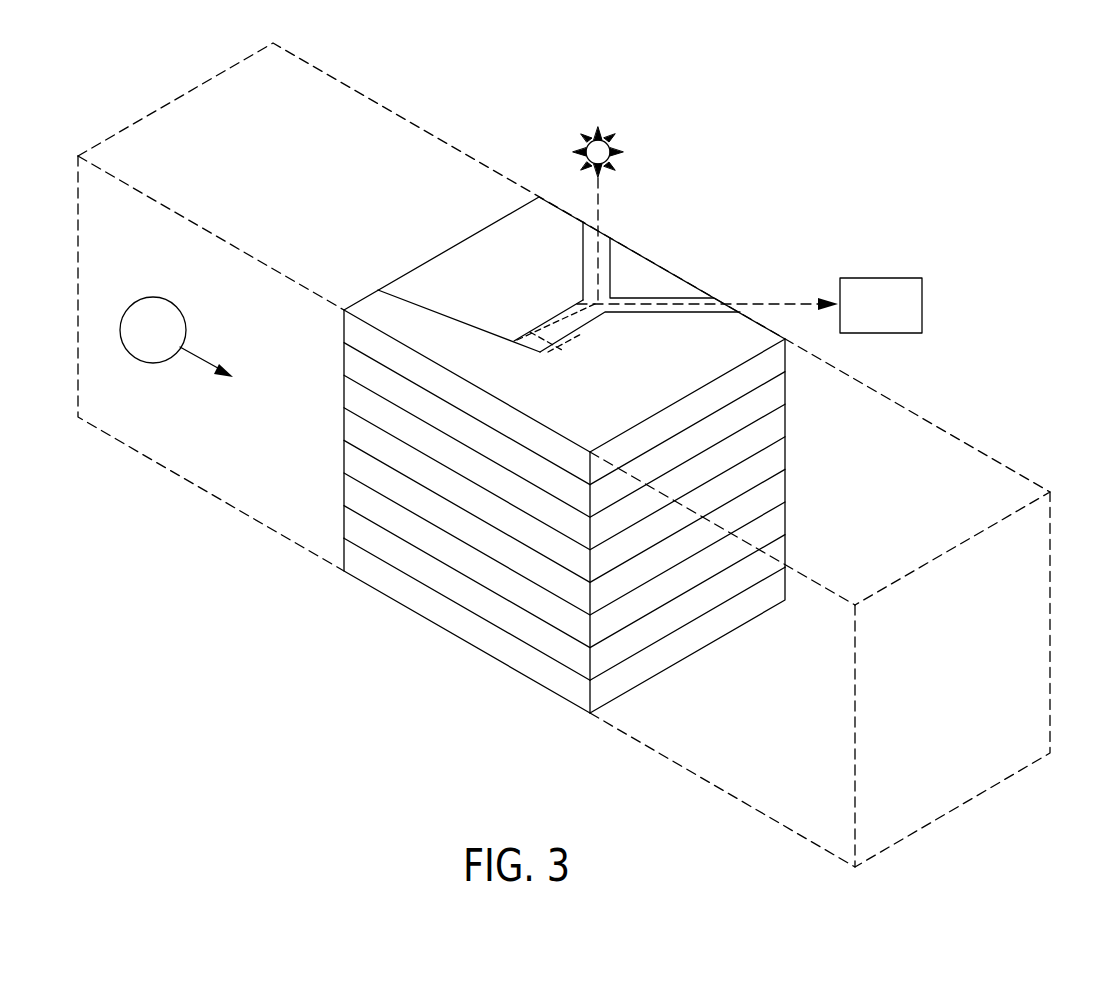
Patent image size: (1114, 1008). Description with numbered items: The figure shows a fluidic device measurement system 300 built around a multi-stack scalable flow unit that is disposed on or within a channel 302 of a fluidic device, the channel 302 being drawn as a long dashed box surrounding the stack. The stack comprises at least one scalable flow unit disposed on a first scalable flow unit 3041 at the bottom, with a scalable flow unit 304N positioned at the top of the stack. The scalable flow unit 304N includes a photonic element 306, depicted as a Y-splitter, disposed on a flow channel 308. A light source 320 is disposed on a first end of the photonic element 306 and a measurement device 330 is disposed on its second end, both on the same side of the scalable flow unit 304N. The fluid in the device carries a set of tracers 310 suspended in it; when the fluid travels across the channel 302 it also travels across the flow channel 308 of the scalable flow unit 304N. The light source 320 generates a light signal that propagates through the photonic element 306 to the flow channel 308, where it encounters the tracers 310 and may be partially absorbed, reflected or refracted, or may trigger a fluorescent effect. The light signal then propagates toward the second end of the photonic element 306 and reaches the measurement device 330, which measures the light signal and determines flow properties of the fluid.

The fluidic device measurement system 300 is at (924, 173).
The channel 302 is at (1010, 468).
The scalable flow unit 304N is at (766, 367).
The first scalable flow unit 3041 is at (655, 654).
The photonic element 306 is at (654, 297).
The flow channel 308 is at (400, 293).
The tracers 310 is at (175, 341).
The light source 320 is at (582, 142).
The measurement device 330 is at (903, 319).